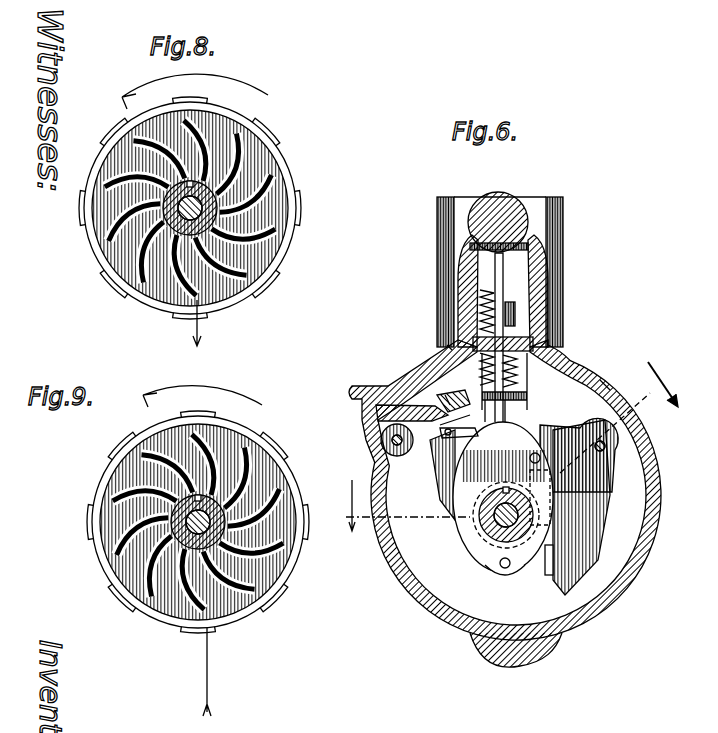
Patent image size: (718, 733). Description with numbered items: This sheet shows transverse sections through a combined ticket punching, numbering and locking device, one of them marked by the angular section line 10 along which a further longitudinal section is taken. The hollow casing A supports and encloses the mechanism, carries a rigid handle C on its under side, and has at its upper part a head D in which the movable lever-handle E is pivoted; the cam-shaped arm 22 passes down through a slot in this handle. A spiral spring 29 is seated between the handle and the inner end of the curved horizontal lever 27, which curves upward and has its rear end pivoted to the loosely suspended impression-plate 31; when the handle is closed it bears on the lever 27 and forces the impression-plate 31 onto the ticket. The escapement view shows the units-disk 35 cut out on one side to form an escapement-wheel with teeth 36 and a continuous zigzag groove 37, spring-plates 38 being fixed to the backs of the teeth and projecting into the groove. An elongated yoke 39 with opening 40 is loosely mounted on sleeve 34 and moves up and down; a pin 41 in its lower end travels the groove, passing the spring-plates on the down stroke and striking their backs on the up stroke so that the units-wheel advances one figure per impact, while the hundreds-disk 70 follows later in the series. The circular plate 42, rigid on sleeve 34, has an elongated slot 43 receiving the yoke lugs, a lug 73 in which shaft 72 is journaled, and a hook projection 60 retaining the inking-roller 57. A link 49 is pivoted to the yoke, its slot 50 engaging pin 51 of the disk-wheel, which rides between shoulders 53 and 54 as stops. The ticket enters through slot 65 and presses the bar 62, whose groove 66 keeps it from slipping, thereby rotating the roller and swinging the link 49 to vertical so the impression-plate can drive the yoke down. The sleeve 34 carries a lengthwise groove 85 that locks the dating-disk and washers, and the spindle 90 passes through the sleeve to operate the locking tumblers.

In FIG. 6, the angular section line 10 is at (629, 417).
In FIG. 6, the cam-shaped arm 22 is at (504, 281).
In FIG. 6, the curved horizontal lever 27 is at (514, 311).
In FIG. 6, the spiral spring 29 is at (490, 300).
In FIG. 6, the impression-plate 31 is at (562, 341).
In FIG. 8, the sleeve 34 is at (228, 197).
In FIG. 9, the sleeve 34 is at (172, 527).
In FIG. 6, the sleeve 34 is at (533, 522).
In FIG. 8, the units-disk 35 is at (275, 261).
In FIG. 8, the escapement teeth 36 is at (125, 252).
In FIG. 9, the escapement teeth 36 is at (147, 577).
In FIG. 8, the continuous zigzag groove 37 is at (163, 297).
In FIG. 9, the continuous zigzag groove 37 is at (190, 587).
In FIG. 9, the spring-plates 38 is at (253, 578).
In FIG. 6, the elongated yoke 39 is at (475, 545).
In FIG. 6, the opening 40 is at (530, 460).
In FIG. 8, the pin 41 is at (200, 285).
In FIG. 9, the pin 41 is at (207, 610).
In FIG. 6, the pin 41 is at (504, 570).
In FIG. 6, the circular plate 42 is at (420, 558).
In FIG. 6, the elongated slot 43 is at (550, 558).
In FIG. 6, the link 49 is at (454, 386).
In FIG. 6, the slot 50 is at (503, 420).
In FIG. 6, the pin 51 is at (444, 447).
In FIG. 6, the shoulder 53 is at (440, 425).
In FIG. 6, the shoulder 54 is at (604, 380).
In FIG. 6, the inking-roller 57 is at (396, 447).
In FIG. 6, the hook projection 60 is at (445, 437).
In FIG. 6, the bar 62 is at (447, 345).
In FIG. 6, the slot 65 is at (360, 394).
In FIG. 6, the groove 66 is at (445, 395).
In FIG. 6, the hundreds-disk 70 is at (398, 505).
In FIG. 6, the shaft 72 is at (606, 446).
In FIG. 6, the lug 73 is at (603, 428).
In FIG. 8, the groove 85 is at (195, 184).
In FIG. 9, the groove 85 is at (210, 498).
In FIG. 6, the groove 85 is at (509, 497).
In FIG. 8, the spindle 90 is at (203, 212).
In FIG. 9, the spindle 90 is at (185, 512).
In FIG. 6, the spindle 90 is at (500, 517).
In FIG. 6, the hollow casing A is at (447, 628).
In FIG. 6, the rigid handle C is at (510, 652).
In FIG. 6, the head D is at (564, 233).
In FIG. 6, the lever-handle E is at (498, 222).